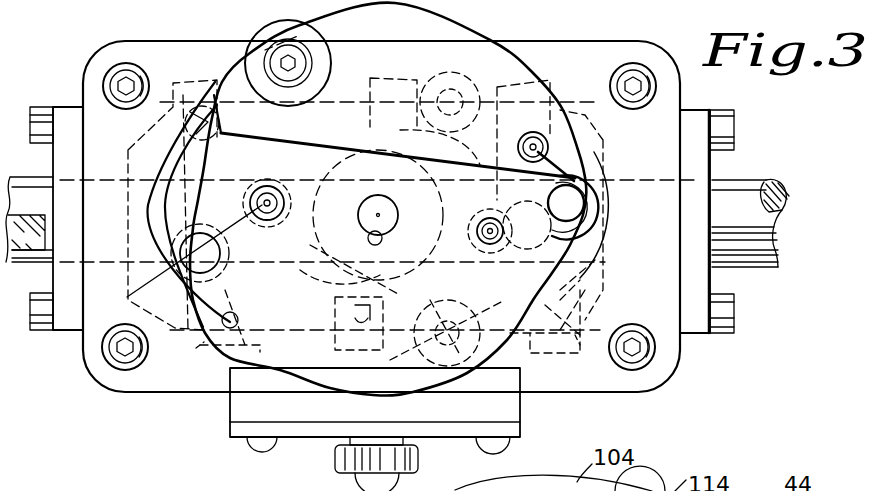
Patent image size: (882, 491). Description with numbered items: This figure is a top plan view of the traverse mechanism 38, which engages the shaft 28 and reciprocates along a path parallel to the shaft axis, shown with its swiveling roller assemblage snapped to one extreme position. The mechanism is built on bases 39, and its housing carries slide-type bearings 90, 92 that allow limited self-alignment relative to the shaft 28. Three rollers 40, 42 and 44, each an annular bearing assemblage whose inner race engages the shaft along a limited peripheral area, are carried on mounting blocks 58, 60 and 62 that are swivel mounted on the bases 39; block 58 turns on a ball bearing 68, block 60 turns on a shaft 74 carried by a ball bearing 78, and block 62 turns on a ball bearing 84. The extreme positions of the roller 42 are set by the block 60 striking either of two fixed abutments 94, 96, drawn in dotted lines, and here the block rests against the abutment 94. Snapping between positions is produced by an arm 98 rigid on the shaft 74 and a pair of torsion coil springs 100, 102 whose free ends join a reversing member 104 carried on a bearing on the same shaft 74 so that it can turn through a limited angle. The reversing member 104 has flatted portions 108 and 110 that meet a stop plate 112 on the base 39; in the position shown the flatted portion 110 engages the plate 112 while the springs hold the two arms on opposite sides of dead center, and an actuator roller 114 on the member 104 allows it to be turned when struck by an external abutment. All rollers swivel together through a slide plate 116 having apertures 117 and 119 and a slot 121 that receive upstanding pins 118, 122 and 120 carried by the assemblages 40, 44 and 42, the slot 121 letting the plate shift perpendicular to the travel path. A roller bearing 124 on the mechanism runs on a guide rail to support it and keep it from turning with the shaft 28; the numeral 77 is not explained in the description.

The shaft 28 is at (750, 192).
The traverse mechanism 38 is at (114, 411).
The bases 39 is at (178, 381).
The roller 40 is at (200, 352).
The roller 42 is at (396, 54).
The roller 44 is at (596, 338).
The mounting block 58 is at (240, 128).
The mounting block 60 is at (358, 128).
The mounting block 62 is at (496, 155).
The ball bearing 68 is at (150, 203).
The shaft 74 is at (396, 215).
The shaft 77 is at (26, 139).
The ball bearing 78 is at (334, 285).
The ball bearing 84 is at (600, 243).
The bearing 90 is at (62, 322).
The bearing 92 is at (698, 332).
The fixed abutment 94 is at (478, 88).
The fixed abutment 96 is at (470, 300).
The arm 98 is at (520, 345).
The torsion coil spring 100 is at (572, 208).
The torsion coil spring 102 is at (140, 292).
The reversing member 104 is at (452, 28).
The flatted portion 108 is at (592, 296).
The flatted portion 110 is at (308, 364).
The stop plate 112 is at (492, 403).
The actuator roller 114 is at (262, 33).
The slide plate 116 is at (142, 119).
The aperture 117 is at (188, 147).
The upstanding pin 118 is at (202, 82).
The aperture 119 is at (547, 85).
The upstanding pin 120 is at (352, 311).
The slot 121 is at (376, 307).
The upstanding pin 122 is at (568, 127).
The roller bearing 124 is at (334, 459).